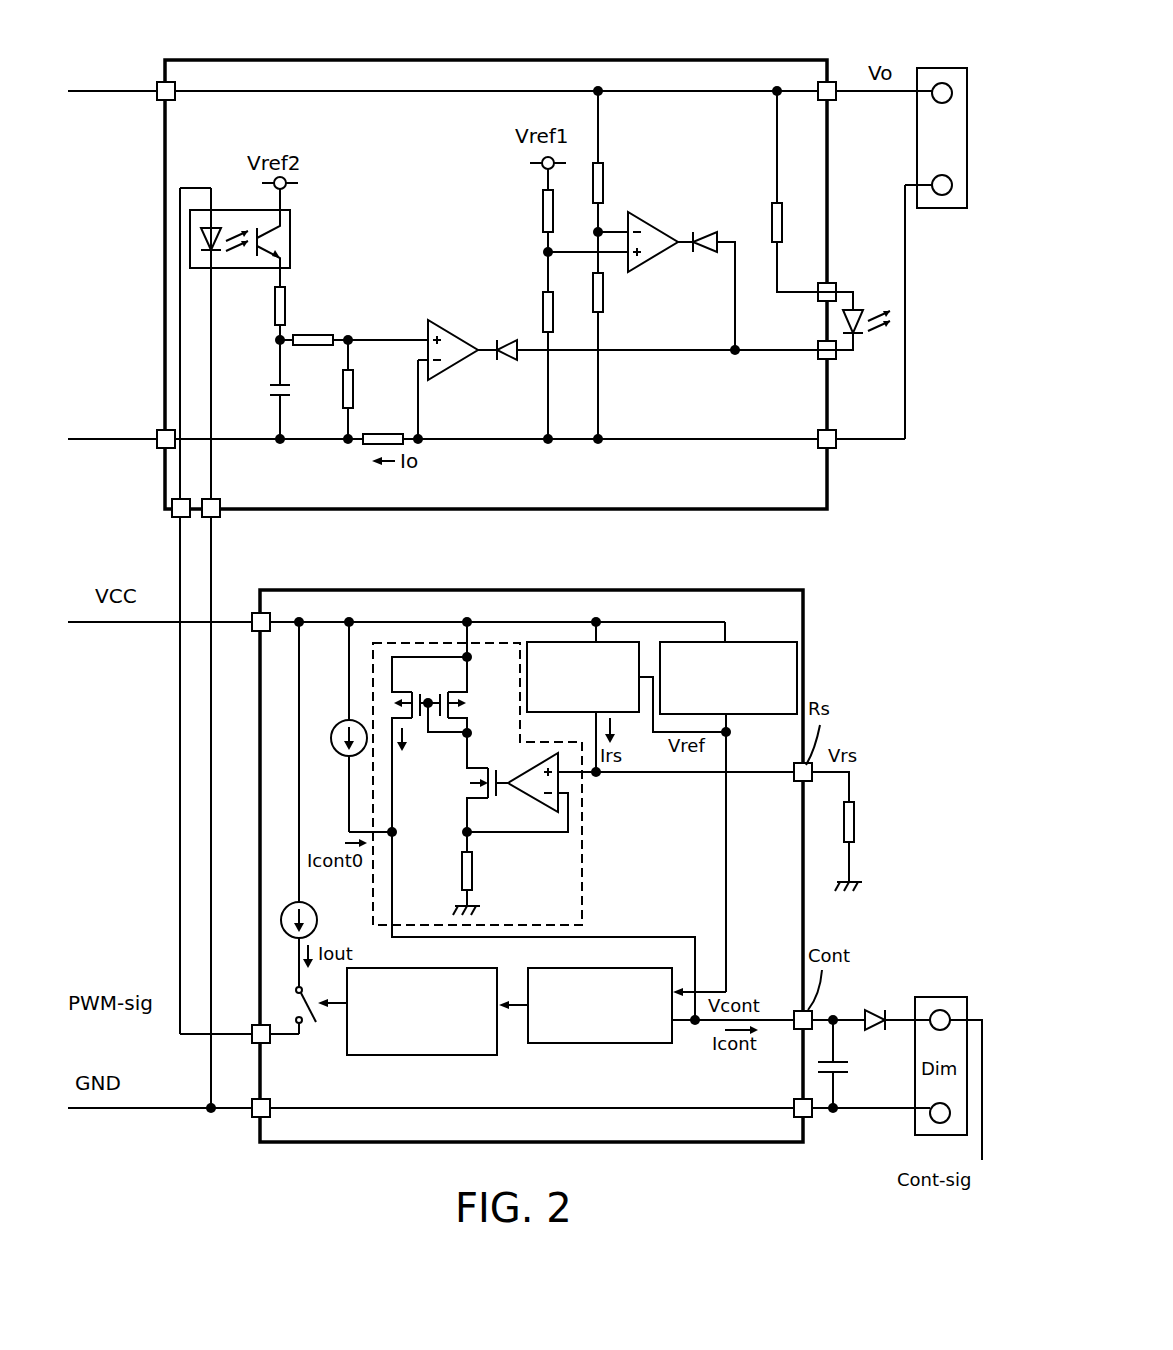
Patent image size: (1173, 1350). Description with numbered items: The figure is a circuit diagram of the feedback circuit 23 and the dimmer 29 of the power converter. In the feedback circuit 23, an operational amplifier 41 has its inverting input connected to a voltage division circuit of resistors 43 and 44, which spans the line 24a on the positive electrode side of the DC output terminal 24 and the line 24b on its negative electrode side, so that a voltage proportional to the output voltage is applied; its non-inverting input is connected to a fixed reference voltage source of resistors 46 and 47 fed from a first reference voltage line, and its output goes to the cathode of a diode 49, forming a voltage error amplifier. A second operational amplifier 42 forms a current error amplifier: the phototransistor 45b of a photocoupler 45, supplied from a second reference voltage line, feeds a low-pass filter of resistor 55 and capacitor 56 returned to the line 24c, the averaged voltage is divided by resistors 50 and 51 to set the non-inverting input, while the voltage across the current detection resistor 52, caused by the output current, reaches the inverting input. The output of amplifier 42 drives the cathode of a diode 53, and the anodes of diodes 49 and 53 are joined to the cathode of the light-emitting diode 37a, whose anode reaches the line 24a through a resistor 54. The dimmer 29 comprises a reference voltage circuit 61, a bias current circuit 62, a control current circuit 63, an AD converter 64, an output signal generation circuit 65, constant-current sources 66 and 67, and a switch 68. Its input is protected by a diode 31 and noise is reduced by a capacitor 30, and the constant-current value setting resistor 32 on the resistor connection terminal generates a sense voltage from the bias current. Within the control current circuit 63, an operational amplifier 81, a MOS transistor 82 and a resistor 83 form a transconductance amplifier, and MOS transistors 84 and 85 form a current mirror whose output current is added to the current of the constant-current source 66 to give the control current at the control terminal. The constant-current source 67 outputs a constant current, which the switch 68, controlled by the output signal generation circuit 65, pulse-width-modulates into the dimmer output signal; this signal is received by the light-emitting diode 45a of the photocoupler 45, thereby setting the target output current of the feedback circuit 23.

The feedback circuit 23 is at (481, 60).
The DC output terminal 24 is at (938, 68).
The line 24a is at (848, 82).
The line 24b is at (863, 437).
The line 24c is at (128, 438).
The dimmer 29 is at (520, 590).
The capacitor 30 is at (850, 1068).
The diode 31 is at (870, 1010).
The constant-current value setting resistor 32 is at (856, 822).
The light-emitting diode 37a is at (858, 305).
The operational amplifier 41 is at (658, 230).
The operational amplifier 42 is at (450, 320).
The resistor 43 is at (608, 185).
The resistor 44 is at (608, 292).
The photocoupler 45 is at (284, 208).
The light-emitting diode 45a is at (213, 228).
The phototransistor 45b is at (290, 243).
The resistor 46 is at (543, 212).
The resistor 47 is at (555, 318).
The diode 49 is at (707, 235).
The resistor 50 is at (313, 335).
The resistor 51 is at (358, 370).
The current detection resistor 52 is at (390, 434).
The diode 53 is at (500, 340).
The resistor 54 is at (782, 222).
The resistor 55 is at (275, 302).
The capacitor 56 is at (270, 390).
The reference voltage circuit 61 is at (735, 642).
The bias current circuit 62 is at (625, 642).
The control current circuit 63 is at (513, 773).
The AD converter 64 is at (578, 968).
The output signal generation circuit 65 is at (405, 968).
The constant-current source 66 is at (338, 722).
The constant-current source 67 is at (292, 905).
The switch 68 is at (295, 1005).
The operational amplifier 81 is at (540, 810).
The MOS transistor 82 is at (485, 770).
The resistor 83 is at (473, 875).
The MOS transistor 84 is at (490, 690).
The MOS transistor 85 is at (400, 690).